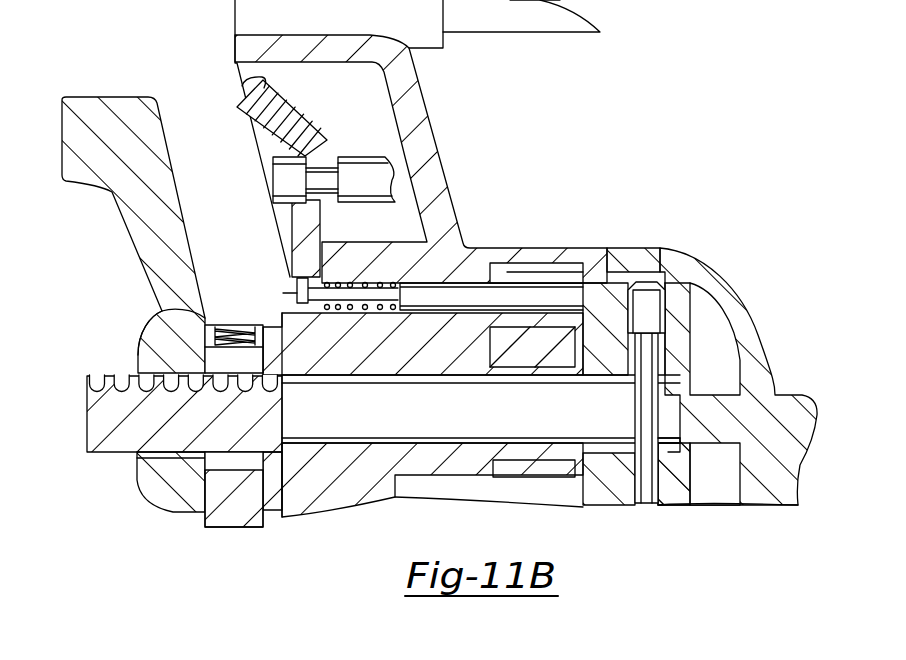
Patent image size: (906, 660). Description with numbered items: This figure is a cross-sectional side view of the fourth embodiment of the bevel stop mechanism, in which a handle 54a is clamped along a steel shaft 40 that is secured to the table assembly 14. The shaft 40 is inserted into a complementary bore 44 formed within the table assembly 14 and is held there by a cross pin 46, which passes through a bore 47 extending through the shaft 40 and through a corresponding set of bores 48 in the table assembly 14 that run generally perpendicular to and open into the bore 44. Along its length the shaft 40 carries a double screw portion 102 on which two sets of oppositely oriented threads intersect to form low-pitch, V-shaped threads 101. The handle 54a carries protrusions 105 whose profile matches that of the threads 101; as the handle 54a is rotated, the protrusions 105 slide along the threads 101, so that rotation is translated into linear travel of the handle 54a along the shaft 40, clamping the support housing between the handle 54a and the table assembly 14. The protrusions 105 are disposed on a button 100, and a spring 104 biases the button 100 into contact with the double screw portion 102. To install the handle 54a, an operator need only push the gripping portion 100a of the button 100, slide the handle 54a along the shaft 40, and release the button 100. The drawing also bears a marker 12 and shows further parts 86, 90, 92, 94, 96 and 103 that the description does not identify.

The table assembly 14 is at (728, 330).
The handle 54a is at (135, 103).
The lever 86 is at (240, 79).
The plunger 96 is at (368, 165).
The bearing assembly 92 is at (350, 290).
The pin 94 is at (297, 296).
The shaft 90 is at (468, 298).
The shaft 40 is at (480, 423).
The bore 44 is at (572, 378).
The double screw portion 102 is at (98, 412).
The V-shaped threads 101 is at (122, 382).
The protrusions 105 is at (245, 388).
The cap 103 is at (203, 316).
The button 100 is at (205, 351).
The spring 104 is at (255, 336).
The gripping portion 100a is at (223, 517).
The cross pin 46 is at (647, 363).
The bore 47 is at (635, 425).
The bores 48 is at (653, 304).
The section line 12- 12 is at (255, 278).